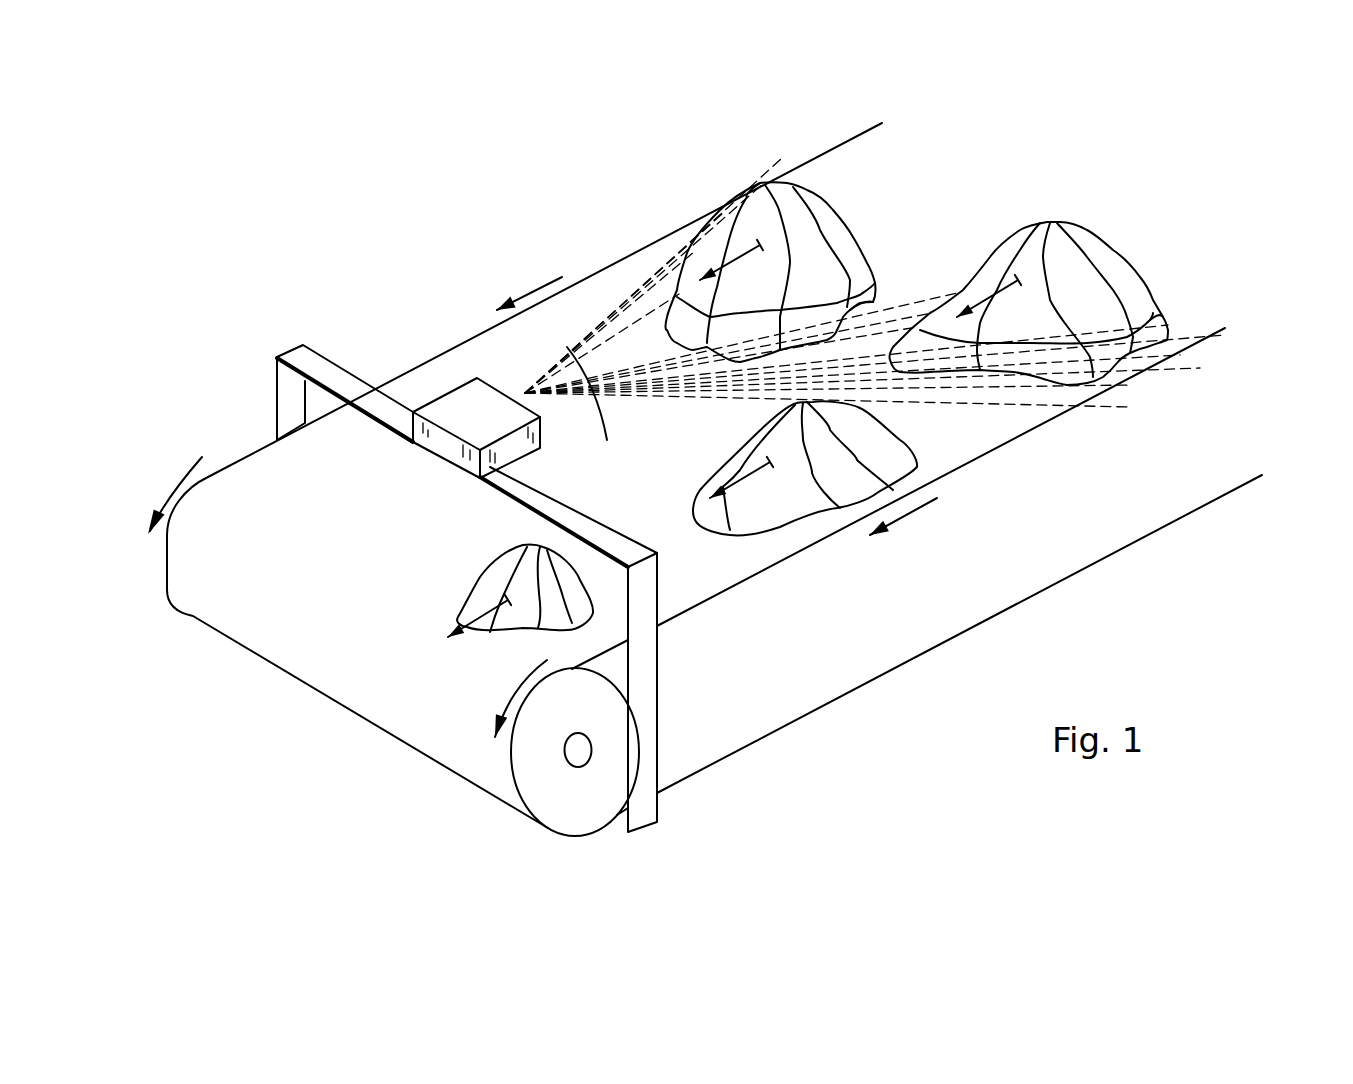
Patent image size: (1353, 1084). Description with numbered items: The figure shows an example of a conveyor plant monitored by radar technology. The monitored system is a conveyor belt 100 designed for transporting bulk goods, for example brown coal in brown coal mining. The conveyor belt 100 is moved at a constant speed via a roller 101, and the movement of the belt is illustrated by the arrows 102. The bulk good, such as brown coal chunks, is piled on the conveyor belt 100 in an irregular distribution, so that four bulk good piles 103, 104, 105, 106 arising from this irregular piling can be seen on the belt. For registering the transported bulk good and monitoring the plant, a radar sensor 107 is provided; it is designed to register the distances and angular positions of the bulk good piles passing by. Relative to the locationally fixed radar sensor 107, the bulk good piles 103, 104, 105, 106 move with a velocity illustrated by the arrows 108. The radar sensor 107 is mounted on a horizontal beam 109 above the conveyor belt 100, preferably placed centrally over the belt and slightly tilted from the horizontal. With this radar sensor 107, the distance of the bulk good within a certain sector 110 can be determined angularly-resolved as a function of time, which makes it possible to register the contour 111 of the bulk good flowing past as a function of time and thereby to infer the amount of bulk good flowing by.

The conveyor belt 100 is at (263, 638).
The roller 101 is at (570, 815).
The arrows 102 is at (535, 292).
The bulk good pile 103 is at (497, 570).
The bulk good pile 104 is at (737, 450).
The bulk good pile 105 is at (1113, 273).
The bulk good pile 106 is at (852, 253).
The radar sensor 107 is at (453, 448).
The arrows 108 is at (743, 262).
The horizontal beam 109 is at (348, 383).
The sector 110 is at (600, 407).
The contour 111 is at (862, 293).